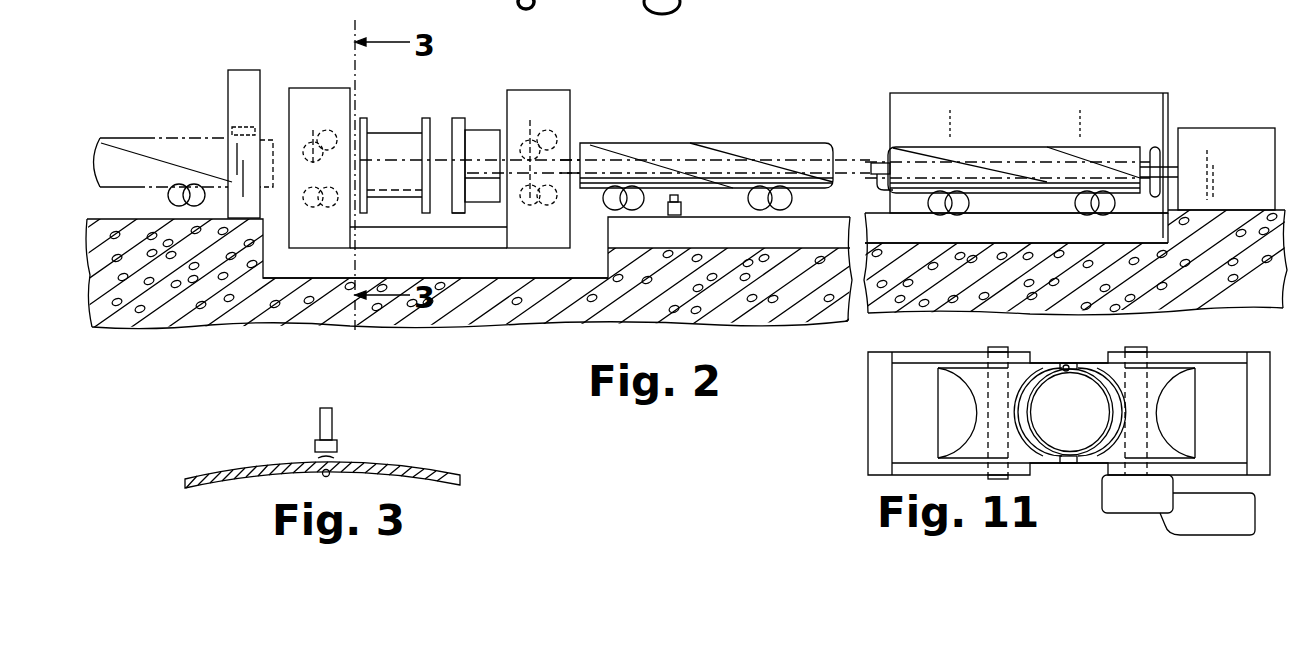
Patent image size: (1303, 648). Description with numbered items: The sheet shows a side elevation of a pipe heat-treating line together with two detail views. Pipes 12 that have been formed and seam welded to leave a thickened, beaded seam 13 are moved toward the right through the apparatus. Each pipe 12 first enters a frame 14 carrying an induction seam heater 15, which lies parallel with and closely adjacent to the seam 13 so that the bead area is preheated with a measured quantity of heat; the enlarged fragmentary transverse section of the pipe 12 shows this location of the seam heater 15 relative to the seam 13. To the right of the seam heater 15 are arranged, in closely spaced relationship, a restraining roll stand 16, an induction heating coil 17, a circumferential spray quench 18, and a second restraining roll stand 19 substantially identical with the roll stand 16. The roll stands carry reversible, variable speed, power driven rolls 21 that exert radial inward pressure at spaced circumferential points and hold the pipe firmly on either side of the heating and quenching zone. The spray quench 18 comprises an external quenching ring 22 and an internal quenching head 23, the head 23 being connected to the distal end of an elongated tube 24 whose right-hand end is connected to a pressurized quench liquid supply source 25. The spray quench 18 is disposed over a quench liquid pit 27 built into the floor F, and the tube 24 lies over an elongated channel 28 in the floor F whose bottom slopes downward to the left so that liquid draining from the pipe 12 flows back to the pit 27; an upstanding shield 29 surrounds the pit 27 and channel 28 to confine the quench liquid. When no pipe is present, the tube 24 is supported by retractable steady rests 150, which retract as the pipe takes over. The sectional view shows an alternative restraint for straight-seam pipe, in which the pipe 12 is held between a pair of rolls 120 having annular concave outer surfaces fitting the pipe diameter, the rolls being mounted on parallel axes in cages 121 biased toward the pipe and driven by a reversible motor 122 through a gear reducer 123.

In FIG. 2, the pipe 12 is at (734, 143).
In FIG. 3, the pipe 12 is at (424, 468).
In FIG. 2, the beaded seam 13 is at (181, 137).
In FIG. 3, the beaded seam 13 is at (318, 458).
In FIG. 2, the frame 14 is at (246, 70).
In FIG. 2, the induction seam heater 15 is at (246, 126).
In FIG. 3, the induction seam heater 15 is at (340, 445).
In FIG. 2, the restraining roll stand 16 is at (331, 66).
In FIG. 2, the induction heating coil 17 is at (390, 130).
In FIG. 2, the circumferential spray quench 18 is at (480, 122).
In FIG. 2, the second restraining roll stand 19 is at (533, 76).
In FIG. 2, the power driven rolls 21 is at (552, 132).
In FIG. 2, the external quenching ring 22 is at (452, 214).
In FIG. 2, the internal quenching head 23 is at (472, 180).
In FIG. 2, the elongated tube 24 is at (878, 162).
In FIG. 2, the quench supply source 25 is at (1226, 137).
In FIG. 2, the quench liquid pit 27 is at (521, 269).
In FIG. 2, the elongated channel 28 is at (1040, 232).
In FIG. 2, the upstanding shield 29 is at (975, 100).
In FIG. 2, the steady rest 150 is at (684, 206).
In FIG. 2, the floor F is at (213, 321).
In FIG. 11, the rolls 120 is at (1176, 367).
In FIG. 11, the cages 121 is at (918, 357).
In FIG. 11, the reversible motor 122 is at (1233, 520).
In FIG. 11, the gear reducer 123 is at (1130, 505).